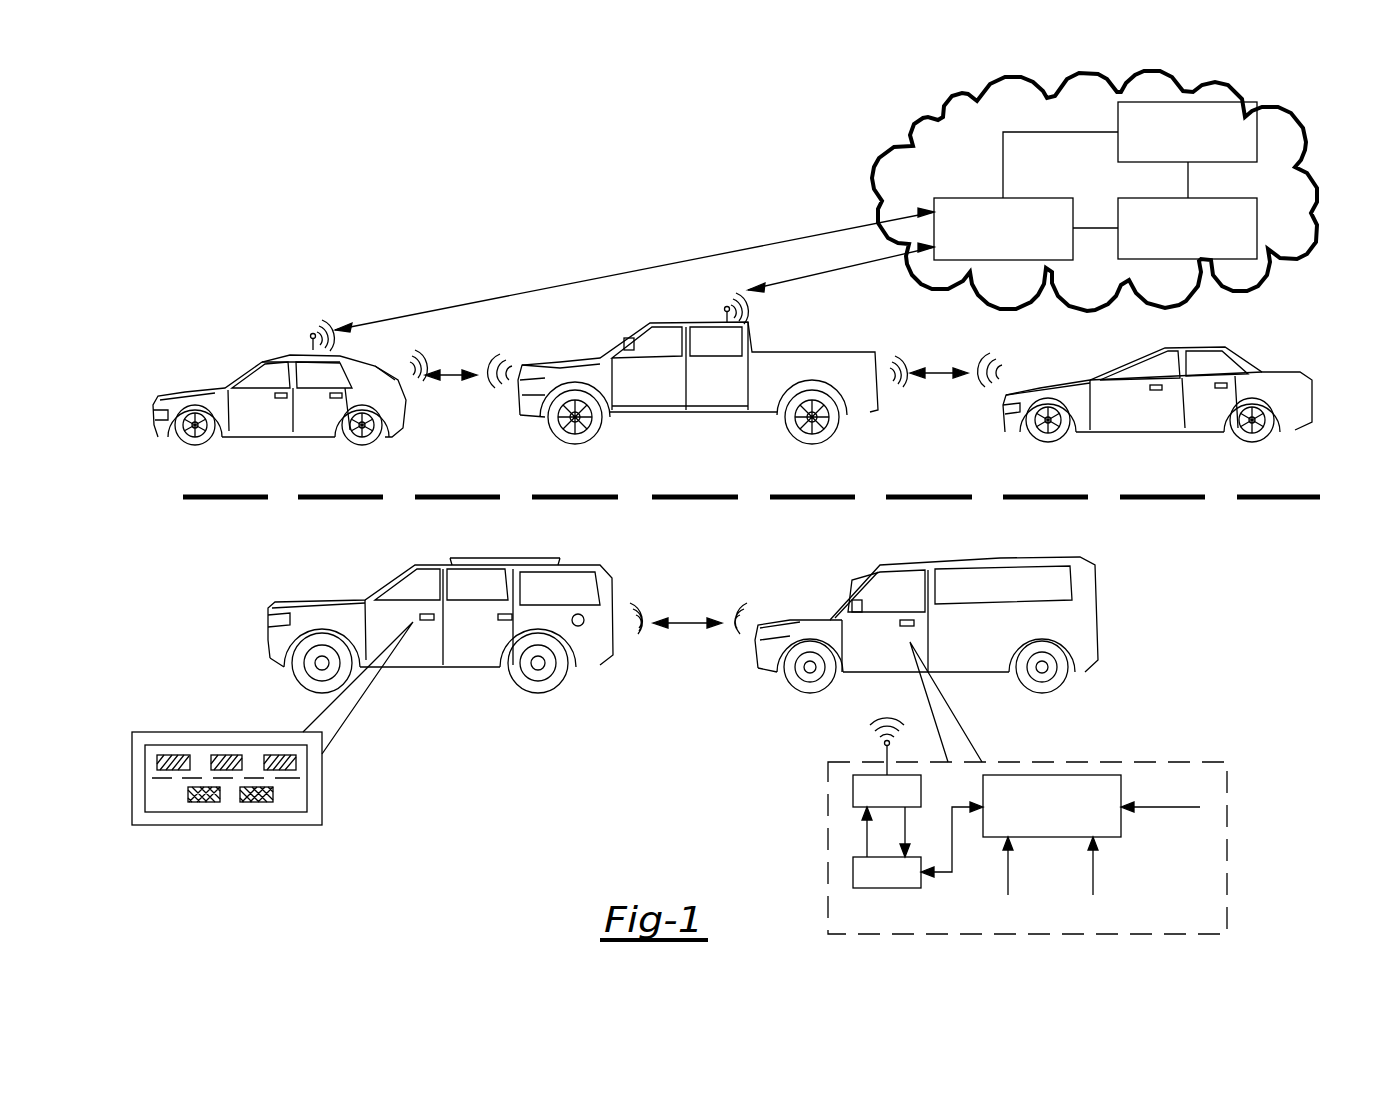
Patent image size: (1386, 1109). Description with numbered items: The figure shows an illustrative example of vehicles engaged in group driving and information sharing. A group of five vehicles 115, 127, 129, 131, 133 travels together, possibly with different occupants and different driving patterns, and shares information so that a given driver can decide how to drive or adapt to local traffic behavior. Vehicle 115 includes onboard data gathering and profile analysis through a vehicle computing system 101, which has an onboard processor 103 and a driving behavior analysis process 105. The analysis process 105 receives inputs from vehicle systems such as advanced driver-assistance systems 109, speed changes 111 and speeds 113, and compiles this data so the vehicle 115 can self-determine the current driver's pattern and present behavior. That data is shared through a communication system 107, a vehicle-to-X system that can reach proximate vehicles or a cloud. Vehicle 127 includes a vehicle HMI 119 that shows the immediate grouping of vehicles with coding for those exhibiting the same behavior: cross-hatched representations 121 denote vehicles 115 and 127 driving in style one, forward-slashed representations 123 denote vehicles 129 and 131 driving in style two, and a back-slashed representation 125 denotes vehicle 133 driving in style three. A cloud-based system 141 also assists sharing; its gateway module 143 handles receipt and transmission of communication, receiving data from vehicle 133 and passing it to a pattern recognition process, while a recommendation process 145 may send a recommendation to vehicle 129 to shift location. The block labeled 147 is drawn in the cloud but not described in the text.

The vehicle computing system 101 is at (1216, 926).
The onboard processor 103 is at (853, 873).
The driving behavior analysis process 105 is at (1065, 775).
The communication system 107 is at (853, 790).
The advanced driver-assistance systems (ADAS) 109 is at (1010, 930).
The speed changes 111 is at (1092, 930).
The speeds 113 is at (1197, 788).
The vehicle 115 is at (968, 558).
The vehicle HMI 119 is at (272, 780).
The representations 121 is at (204, 812).
The representations 123 is at (228, 755).
The representation 125 is at (175, 755).
The vehicle 127 is at (318, 600).
The vehicle 129 is at (583, 355).
The vehicle 131 is at (1080, 378).
The vehicle 133 is at (260, 360).
The cloud-based system 141 is at (1293, 133).
The gateway module 143 is at (975, 198).
The recommendation process 145 is at (1118, 120).
The recommender 147 is at (1257, 230).